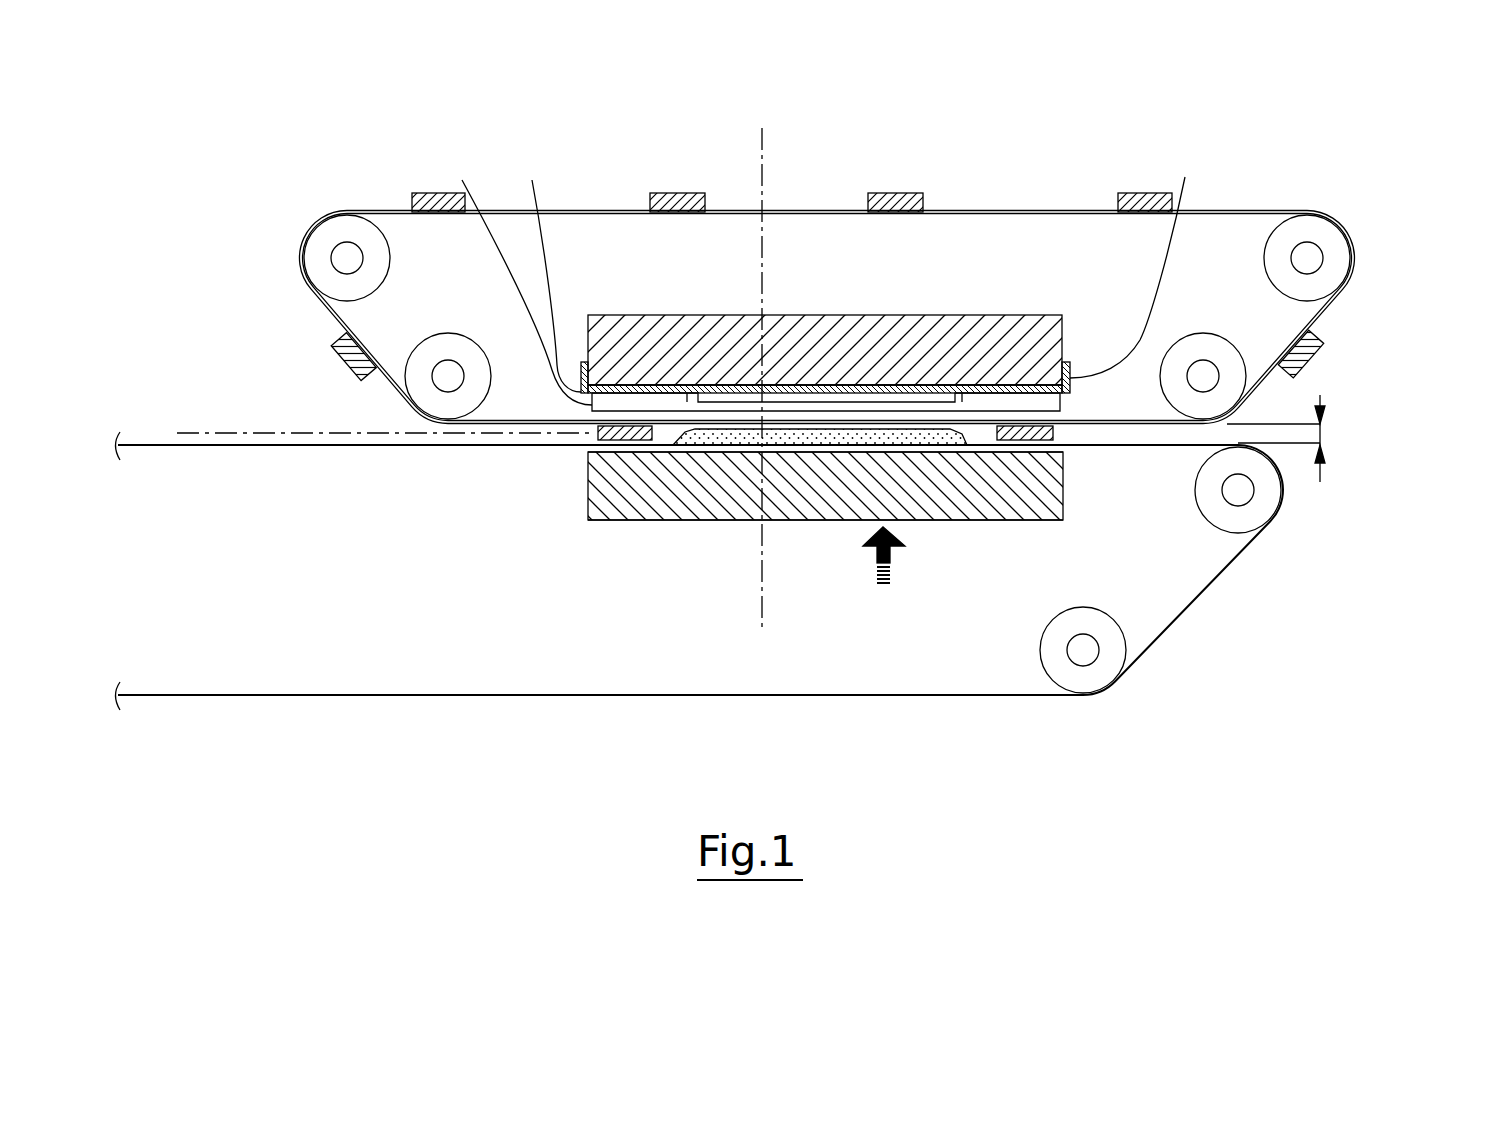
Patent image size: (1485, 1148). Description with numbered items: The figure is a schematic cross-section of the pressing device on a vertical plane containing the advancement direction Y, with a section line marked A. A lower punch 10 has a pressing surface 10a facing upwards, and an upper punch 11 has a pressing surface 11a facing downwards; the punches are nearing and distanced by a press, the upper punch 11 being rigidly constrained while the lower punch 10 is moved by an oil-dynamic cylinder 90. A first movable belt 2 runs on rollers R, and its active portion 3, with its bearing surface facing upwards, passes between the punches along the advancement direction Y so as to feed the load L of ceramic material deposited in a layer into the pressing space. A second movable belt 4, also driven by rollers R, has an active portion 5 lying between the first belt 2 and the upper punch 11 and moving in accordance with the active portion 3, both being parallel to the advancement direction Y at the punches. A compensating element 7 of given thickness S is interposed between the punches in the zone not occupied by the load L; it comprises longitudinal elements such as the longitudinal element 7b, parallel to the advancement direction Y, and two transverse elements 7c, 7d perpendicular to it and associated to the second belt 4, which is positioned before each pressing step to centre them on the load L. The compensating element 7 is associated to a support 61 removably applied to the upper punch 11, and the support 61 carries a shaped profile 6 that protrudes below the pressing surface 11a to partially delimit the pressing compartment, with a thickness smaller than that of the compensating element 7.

The first movable belt 2 is at (278, 684).
The active portion 3 is at (347, 446).
The second movable belt 4 is at (318, 320).
The active portion 5 is at (513, 423).
The shaped profile 6 is at (690, 400).
The support 61 is at (860, 269).
The compensating element 7 is at (881, 382).
The longitudinal element 7b is at (507, 276).
The transverse element 7c is at (598, 440).
The transverse element 7d is at (418, 193).
The lower punch 10 is at (1085, 509).
The pressing surface 10a is at (920, 453).
The upper punch 11 is at (1095, 308).
The pressing surface 11a is at (1003, 365).
The oil-dynamic cylinder 90 is at (613, 523).
The load L is at (715, 442).
The rollers R is at (347, 228).
The thickness S is at (1331, 438).
The advancement direction Y is at (383, 419).
The section line A- A is at (762, 144).